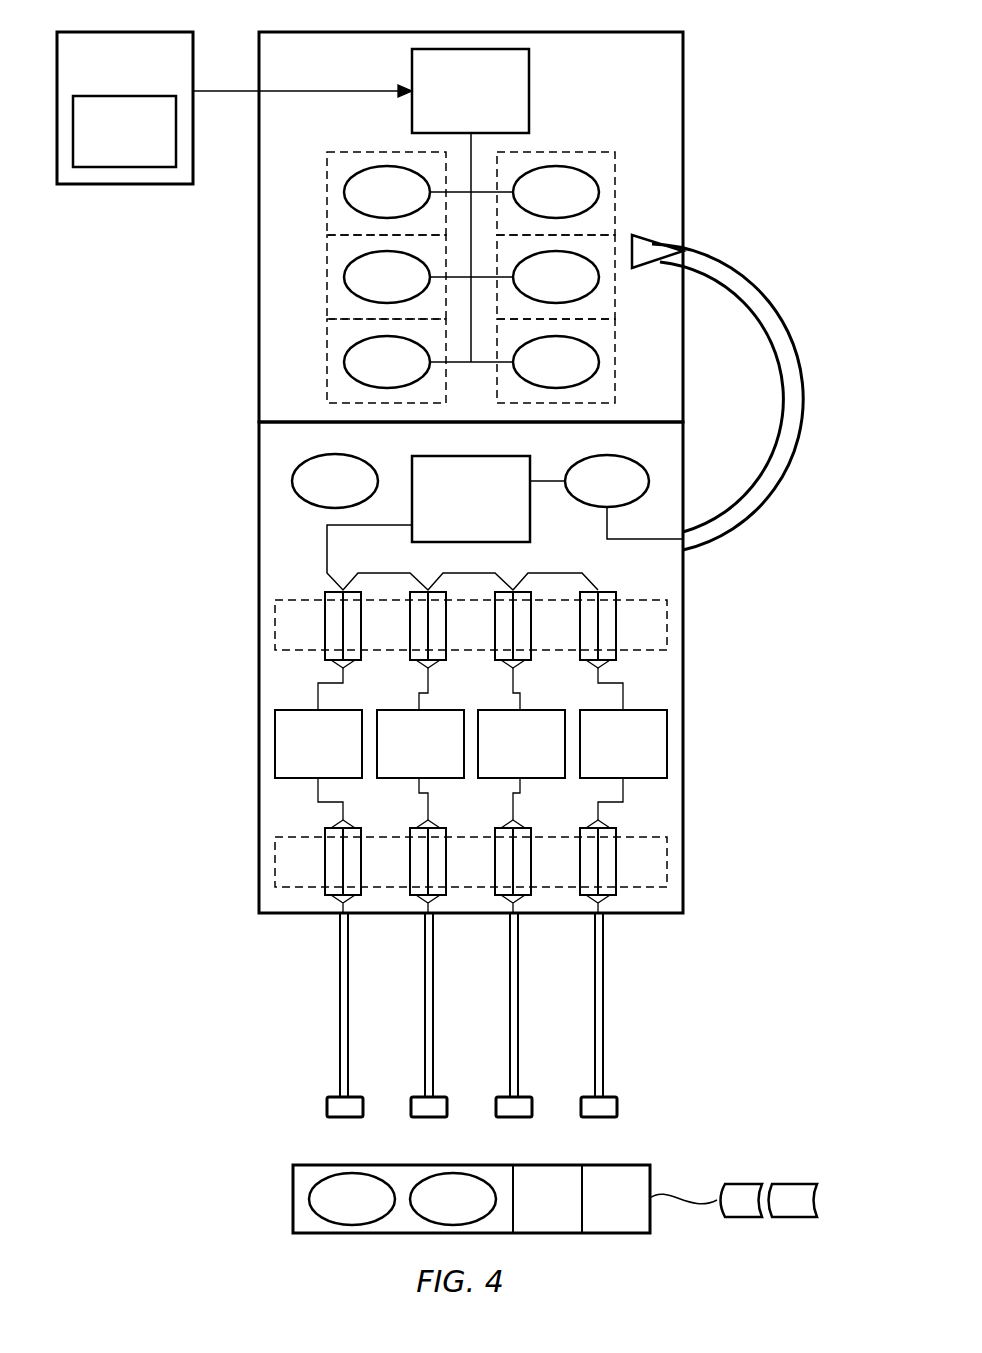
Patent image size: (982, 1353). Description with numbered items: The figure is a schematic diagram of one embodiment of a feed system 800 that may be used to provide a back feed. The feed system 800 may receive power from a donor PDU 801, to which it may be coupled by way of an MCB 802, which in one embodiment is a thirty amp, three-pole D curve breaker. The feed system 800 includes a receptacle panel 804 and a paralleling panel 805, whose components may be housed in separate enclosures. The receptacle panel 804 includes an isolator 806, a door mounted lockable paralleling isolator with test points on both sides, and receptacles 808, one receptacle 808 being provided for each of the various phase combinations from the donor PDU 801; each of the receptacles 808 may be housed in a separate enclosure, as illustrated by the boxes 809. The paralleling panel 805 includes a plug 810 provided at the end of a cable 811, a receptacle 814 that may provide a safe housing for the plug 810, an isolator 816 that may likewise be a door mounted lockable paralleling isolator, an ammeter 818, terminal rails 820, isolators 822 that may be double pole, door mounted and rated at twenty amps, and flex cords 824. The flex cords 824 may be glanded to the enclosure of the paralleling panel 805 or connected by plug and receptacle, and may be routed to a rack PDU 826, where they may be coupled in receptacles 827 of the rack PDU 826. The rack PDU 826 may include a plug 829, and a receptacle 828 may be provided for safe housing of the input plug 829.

The feed system 800 is at (715, 84).
The donor PDU 801 is at (125, 108).
The MCB 802 is at (124, 131).
The receptacle panel 804 is at (471, 227).
The paralleling panel 805 is at (509, 667).
The isolator 806 is at (470, 91).
The receptacles 808 is at (555, 166).
The boxes 809 is at (604, 152).
The plug 810 is at (658, 270).
The cable 811 is at (765, 320).
The receptacle 814 is at (316, 508).
The isolator 816 is at (471, 499).
The ammeter 818 is at (592, 508).
The terminal rails 820 is at (667, 614).
The isolators 822 is at (667, 724).
The flex cords 824 is at (604, 1003).
The rack PDU 826 is at (293, 1195).
The receptacles 827 is at (352, 1199).
The receptacle 828 is at (786, 1183).
The plug 829 is at (741, 1218).